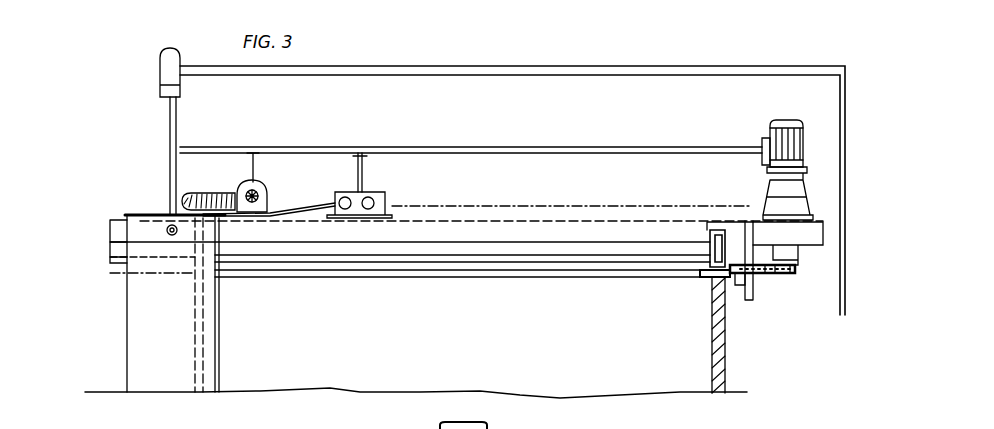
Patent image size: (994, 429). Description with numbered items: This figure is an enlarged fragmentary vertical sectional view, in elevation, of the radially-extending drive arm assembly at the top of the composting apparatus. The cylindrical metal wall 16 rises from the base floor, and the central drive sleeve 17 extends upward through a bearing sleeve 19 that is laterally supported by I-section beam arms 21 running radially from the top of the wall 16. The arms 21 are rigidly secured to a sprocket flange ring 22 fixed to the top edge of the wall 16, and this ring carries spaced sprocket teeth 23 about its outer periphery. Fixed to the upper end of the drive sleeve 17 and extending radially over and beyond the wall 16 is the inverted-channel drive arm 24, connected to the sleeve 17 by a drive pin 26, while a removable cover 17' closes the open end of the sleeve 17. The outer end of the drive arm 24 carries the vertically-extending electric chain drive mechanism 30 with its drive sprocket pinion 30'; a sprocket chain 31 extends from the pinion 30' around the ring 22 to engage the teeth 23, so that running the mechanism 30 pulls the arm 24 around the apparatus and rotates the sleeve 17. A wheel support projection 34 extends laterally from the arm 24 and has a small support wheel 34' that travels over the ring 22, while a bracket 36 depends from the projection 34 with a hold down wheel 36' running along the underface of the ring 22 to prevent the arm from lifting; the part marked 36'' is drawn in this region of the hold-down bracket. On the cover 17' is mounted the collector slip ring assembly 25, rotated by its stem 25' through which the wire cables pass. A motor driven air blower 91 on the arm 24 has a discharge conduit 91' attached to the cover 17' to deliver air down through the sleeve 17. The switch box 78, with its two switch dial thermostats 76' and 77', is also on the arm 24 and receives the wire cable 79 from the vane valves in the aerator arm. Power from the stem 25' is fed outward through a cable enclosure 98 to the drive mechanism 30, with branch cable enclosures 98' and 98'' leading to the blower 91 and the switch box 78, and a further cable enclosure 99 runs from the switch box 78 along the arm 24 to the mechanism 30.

The cylindrical metal wall 16 is at (725, 350).
The drive sleeve 17 is at (146, 303).
The removable cover 17' is at (162, 195).
The bearing sleeve 19 is at (127, 277).
The I-section beam arms 21 is at (384, 278).
The sprocket flange ring 22 is at (712, 290).
The sprocket teeth 23 is at (745, 266).
The drive arm 24 is at (138, 220).
The collector slip ring assembly 25 is at (142, 72).
The stem 25' is at (140, 156).
The drive pin 26 is at (540, 68).
The electric chain drive mechanism 30 is at (760, 154).
The drive sprocket pinion 30' is at (811, 284).
The sprocket chain 31 is at (770, 275).
The wheel support projection 34 is at (686, 220).
The support wheel 34' is at (683, 298).
The bracket 36 is at (734, 237).
The hold down wheel 36' is at (762, 269).
The block 36'' is at (764, 305).
The switch dial thermostat 76' is at (335, 183).
The switch dial thermostat 77' is at (383, 183).
The switch box 78 is at (385, 205).
The wire cable 79 is at (280, 211).
The motor driven air blower 91 is at (268, 184).
The discharge conduit 91' is at (208, 183).
The cable enclosure 98 is at (471, 128).
The branch cable enclosure 98' is at (258, 140).
The branch cable enclosure 98'' is at (374, 143).
The cable enclosure 99 is at (568, 210).